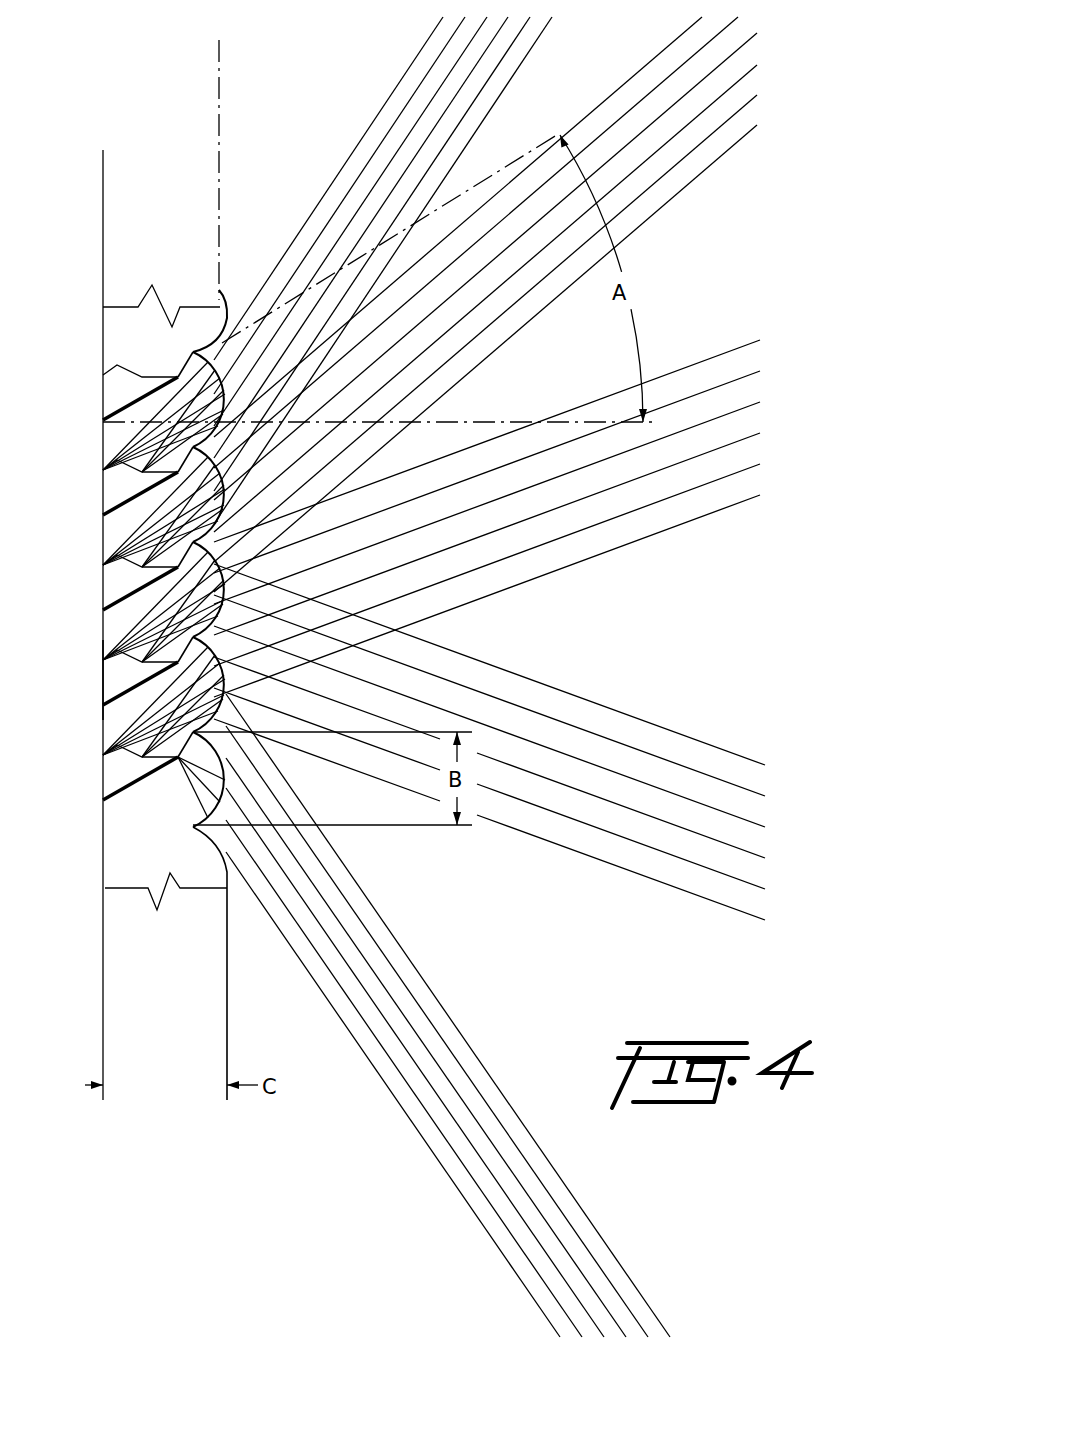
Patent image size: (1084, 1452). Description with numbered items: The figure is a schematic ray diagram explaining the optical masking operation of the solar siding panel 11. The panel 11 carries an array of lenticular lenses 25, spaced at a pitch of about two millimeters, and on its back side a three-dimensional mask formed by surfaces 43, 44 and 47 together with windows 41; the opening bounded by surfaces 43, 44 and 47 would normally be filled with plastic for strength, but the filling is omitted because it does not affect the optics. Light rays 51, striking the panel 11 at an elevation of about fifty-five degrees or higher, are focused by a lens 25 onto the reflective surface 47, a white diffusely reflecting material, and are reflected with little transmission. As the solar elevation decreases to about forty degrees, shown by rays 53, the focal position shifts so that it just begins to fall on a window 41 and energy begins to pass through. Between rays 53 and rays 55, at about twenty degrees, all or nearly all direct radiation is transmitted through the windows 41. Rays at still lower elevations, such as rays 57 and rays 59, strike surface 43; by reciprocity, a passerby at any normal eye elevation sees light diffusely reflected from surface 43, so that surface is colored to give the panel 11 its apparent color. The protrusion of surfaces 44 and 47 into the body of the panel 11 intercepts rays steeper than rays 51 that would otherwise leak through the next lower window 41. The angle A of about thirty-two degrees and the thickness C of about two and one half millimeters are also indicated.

The panel 11 is at (140, 347).
The lenses 25 is at (219, 292).
The window 41 is at (101, 647).
The surface 43 is at (150, 776).
The surface 44 is at (140, 734).
The reflective surface 47 is at (156, 737).
The light rays 51 is at (381, 110).
The rays 53 is at (598, 106).
The rays 55 is at (722, 353).
The rays 57 is at (633, 715).
The rays 59 is at (404, 952).